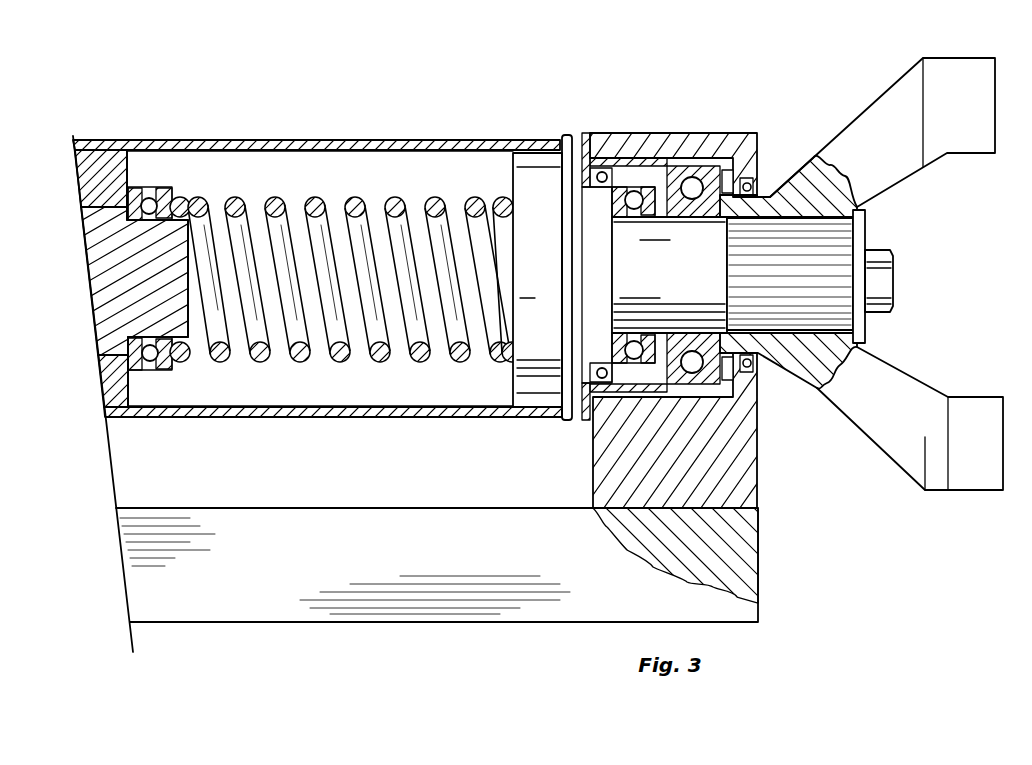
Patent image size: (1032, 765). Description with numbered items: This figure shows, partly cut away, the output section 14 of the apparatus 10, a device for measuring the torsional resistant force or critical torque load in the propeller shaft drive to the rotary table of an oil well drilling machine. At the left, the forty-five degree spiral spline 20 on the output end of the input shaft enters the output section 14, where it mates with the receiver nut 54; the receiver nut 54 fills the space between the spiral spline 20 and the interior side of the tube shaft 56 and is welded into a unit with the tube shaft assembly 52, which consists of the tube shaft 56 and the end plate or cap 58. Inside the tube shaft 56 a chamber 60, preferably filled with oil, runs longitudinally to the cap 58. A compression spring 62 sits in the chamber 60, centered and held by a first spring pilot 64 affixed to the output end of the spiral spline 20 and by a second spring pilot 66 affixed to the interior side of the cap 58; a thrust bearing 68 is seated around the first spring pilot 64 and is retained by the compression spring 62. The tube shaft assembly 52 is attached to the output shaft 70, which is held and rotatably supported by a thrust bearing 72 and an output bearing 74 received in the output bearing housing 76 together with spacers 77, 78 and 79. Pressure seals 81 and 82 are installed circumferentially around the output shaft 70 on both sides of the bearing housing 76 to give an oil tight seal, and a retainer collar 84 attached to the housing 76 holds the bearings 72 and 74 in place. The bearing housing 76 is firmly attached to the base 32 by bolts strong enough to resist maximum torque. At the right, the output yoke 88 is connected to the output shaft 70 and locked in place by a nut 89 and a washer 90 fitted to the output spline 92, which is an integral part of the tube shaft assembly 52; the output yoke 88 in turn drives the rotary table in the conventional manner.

The apparatus 10 is at (470, 103).
The output section 14 is at (378, 143).
The spiral spline 20 is at (115, 248).
The base 32 is at (182, 612).
The tube shaft assembly 52 is at (197, 416).
The receiver nut 54 is at (118, 162).
The tube shaft 56 is at (323, 395).
The cap 58 is at (535, 253).
The chamber 60 is at (298, 168).
The compression spring 62 is at (245, 267).
The first spring pilot 64 is at (168, 252).
The second spring pilot 66 is at (510, 197).
The thrust bearing 68 is at (142, 200).
The output shaft 70 is at (633, 262).
The thrust bearing 72 is at (627, 185).
The output bearing 74 is at (683, 215).
The output bearing housing 76 is at (712, 133).
The spacer 77 is at (653, 157).
The spacer 78 is at (665, 200).
The spacer 79 is at (730, 168).
The pressure seal 81 is at (602, 172).
The pressure seal 82 is at (757, 185).
The retainer collar 84 is at (585, 133).
The output yoke 88 is at (907, 107).
The nut 89 is at (880, 280).
The washer 90 is at (860, 233).
The output spline 92 is at (810, 293).